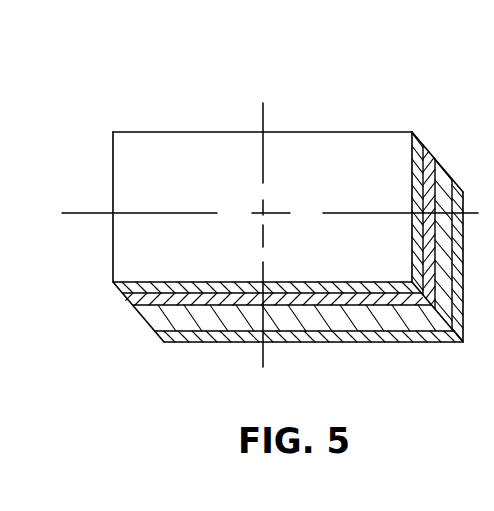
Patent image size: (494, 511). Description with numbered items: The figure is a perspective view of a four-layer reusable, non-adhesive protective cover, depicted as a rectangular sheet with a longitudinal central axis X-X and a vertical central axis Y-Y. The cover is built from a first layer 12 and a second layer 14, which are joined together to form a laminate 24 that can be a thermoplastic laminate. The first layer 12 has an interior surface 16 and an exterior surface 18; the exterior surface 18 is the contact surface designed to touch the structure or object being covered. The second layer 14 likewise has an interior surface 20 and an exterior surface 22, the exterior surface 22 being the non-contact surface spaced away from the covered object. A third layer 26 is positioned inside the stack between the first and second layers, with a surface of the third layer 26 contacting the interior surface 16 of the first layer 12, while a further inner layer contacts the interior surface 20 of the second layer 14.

The exterior surface of the second layer 22 is at (320, 187).
The laminate 24 is at (199, 132).
The second layer 14 is at (131, 291).
The interior surface of the second layer 20 is at (141, 292).
The third layer 26 is at (157, 318).
The interior surface of the first layer 16 is at (351, 329).
The first layer 12 is at (382, 342).
The exterior surface of the first layer 18 is at (407, 343).